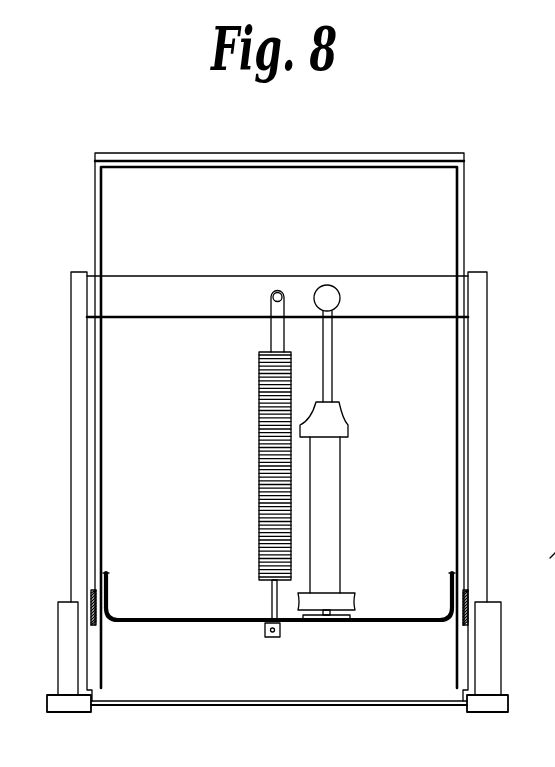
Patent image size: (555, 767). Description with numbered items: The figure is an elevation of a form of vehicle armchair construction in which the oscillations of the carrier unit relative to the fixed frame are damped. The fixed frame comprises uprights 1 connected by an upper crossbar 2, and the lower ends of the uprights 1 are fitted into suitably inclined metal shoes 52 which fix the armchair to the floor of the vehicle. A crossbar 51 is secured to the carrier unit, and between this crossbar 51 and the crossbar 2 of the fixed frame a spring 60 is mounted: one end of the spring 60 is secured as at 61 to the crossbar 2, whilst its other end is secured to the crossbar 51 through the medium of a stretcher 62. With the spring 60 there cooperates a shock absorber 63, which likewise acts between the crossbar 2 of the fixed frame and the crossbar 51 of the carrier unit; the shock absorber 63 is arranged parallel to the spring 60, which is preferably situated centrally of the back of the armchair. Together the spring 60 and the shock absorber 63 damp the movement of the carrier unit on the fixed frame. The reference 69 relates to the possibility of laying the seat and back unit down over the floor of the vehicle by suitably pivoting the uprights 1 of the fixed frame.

The uprights of the fixed frame 1 is at (486, 396).
The crossbar 2 is at (158, 304).
The crossbar 51 is at (152, 623).
The metal shoes 52 is at (66, 638).
The spring 60 is at (266, 422).
The securing point of the spring 61 is at (283, 289).
The stretcher 62 is at (272, 597).
The shock absorber 63 is at (339, 468).
The laid-down position 69 is at (541, 562).